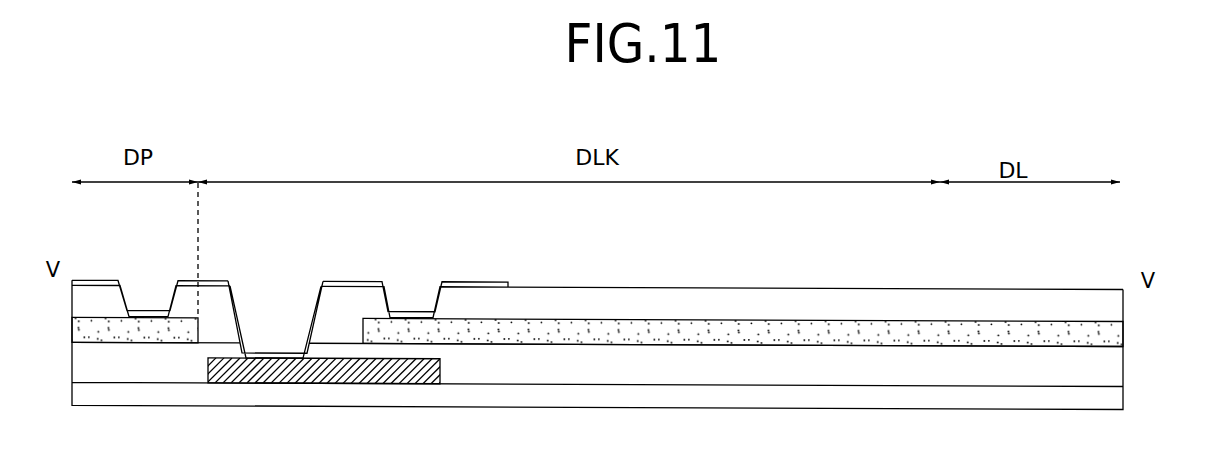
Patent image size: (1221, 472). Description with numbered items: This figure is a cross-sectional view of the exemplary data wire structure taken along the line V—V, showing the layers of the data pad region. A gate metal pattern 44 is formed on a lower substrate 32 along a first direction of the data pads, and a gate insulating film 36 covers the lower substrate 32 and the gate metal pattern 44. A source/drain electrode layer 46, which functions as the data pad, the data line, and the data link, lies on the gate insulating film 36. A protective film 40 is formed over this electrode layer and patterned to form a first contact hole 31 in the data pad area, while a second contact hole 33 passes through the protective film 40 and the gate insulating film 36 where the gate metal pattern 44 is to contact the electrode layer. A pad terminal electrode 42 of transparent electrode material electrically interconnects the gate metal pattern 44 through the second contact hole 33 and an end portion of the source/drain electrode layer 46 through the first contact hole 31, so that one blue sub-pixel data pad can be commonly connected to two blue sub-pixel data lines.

The first contact hole 31 is at (409, 299).
The lower substrate 32 is at (1122, 396).
The second contact hole 33 is at (278, 294).
The gate insulating film 36 is at (1122, 357).
The protective film 40 is at (1122, 304).
The pad terminal electrode 42 is at (227, 284).
The gate metal pattern 44 is at (316, 366).
The source/drain electrode layer 46 is at (619, 330).